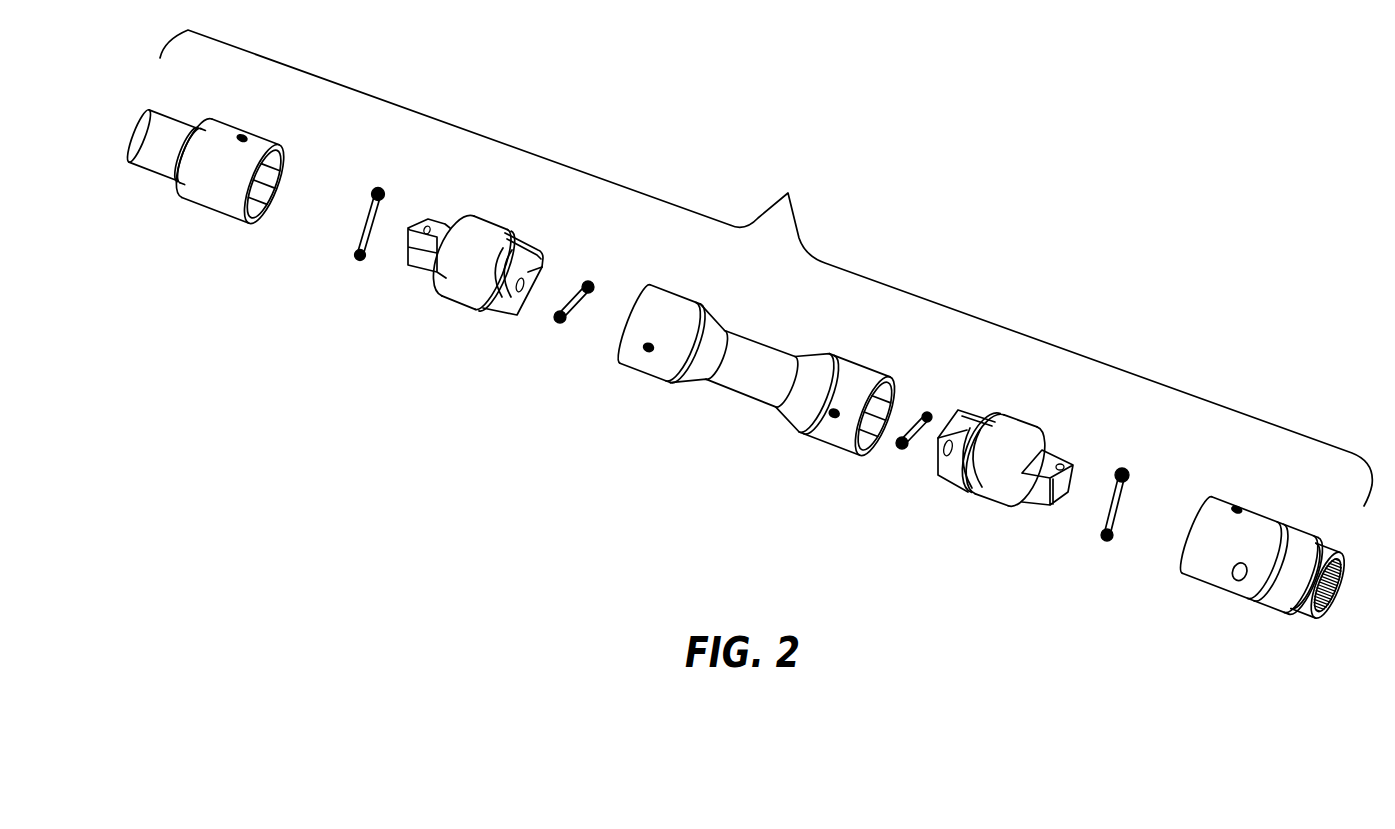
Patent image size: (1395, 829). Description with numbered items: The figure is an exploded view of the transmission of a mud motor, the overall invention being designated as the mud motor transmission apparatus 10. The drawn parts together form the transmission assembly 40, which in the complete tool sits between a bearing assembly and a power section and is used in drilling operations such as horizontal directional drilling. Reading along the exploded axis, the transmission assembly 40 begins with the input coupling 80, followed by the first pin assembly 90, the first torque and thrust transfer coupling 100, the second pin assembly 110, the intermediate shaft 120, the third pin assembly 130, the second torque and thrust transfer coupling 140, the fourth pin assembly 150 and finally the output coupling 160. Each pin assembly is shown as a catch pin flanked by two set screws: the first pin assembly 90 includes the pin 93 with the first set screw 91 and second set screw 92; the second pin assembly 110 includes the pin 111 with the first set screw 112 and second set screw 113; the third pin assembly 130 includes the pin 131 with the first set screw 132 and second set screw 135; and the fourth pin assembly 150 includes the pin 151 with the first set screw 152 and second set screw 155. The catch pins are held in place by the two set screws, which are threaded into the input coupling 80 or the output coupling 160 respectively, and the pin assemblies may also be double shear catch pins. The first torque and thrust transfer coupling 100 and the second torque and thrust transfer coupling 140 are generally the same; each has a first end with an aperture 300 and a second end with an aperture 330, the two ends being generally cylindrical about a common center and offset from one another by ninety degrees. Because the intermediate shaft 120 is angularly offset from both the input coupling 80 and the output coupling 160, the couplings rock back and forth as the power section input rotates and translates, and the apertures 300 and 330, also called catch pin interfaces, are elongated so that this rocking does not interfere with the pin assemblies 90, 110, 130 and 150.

The mud motor transmission apparatus 10 is at (1066, 272).
The transmission assembly 40 is at (766, 268).
The input coupling 80 is at (235, 126).
The first pin assembly 90 is at (346, 244).
The first set screw 91 is at (355, 253).
The second set screw 92 is at (372, 191).
The pin 93 is at (363, 219).
The first torque and thrust transfer coupling 100 is at (495, 268).
The second pin assembly 110 is at (568, 321).
The pin 111 is at (573, 306).
The first set screw 112 is at (598, 289).
The second set screw 113 is at (557, 311).
The intermediate shaft 120 is at (776, 343).
The third pin assembly 130 is at (912, 439).
The pin 131 is at (915, 430).
The first set screw 132 is at (935, 422).
The second set screw 135 is at (906, 447).
The second torque and thrust transfer coupling 140 is at (987, 509).
The fourth pin assembly 150 is at (1126, 532).
The pin 151 is at (1124, 507).
The first set screw 152 is at (1131, 475).
The second set screw 155 is at (1116, 537).
The output coupling 160 is at (1210, 590).
The aperture 300 is at (429, 226).
The aperture 330 is at (525, 290).